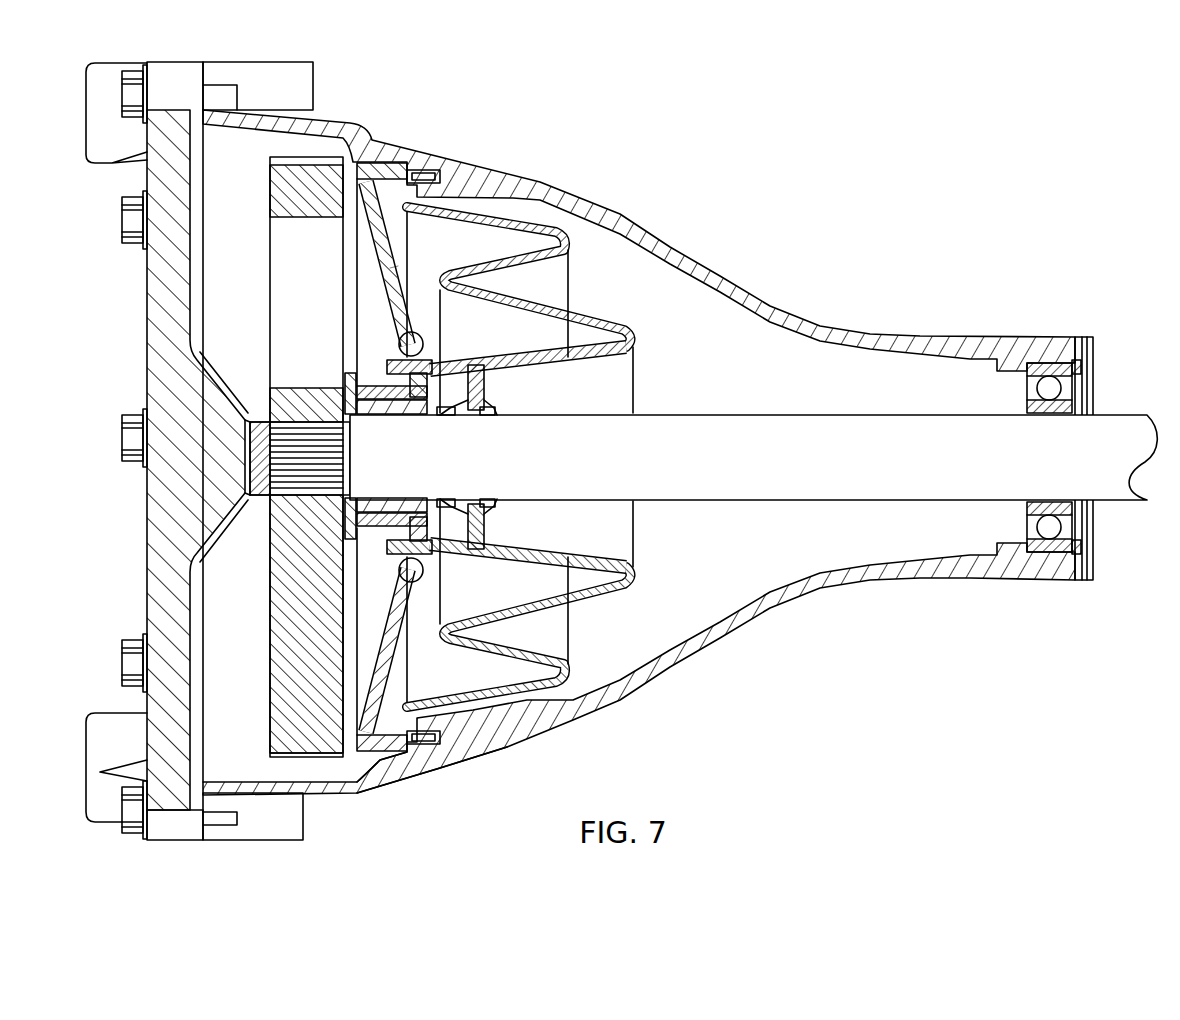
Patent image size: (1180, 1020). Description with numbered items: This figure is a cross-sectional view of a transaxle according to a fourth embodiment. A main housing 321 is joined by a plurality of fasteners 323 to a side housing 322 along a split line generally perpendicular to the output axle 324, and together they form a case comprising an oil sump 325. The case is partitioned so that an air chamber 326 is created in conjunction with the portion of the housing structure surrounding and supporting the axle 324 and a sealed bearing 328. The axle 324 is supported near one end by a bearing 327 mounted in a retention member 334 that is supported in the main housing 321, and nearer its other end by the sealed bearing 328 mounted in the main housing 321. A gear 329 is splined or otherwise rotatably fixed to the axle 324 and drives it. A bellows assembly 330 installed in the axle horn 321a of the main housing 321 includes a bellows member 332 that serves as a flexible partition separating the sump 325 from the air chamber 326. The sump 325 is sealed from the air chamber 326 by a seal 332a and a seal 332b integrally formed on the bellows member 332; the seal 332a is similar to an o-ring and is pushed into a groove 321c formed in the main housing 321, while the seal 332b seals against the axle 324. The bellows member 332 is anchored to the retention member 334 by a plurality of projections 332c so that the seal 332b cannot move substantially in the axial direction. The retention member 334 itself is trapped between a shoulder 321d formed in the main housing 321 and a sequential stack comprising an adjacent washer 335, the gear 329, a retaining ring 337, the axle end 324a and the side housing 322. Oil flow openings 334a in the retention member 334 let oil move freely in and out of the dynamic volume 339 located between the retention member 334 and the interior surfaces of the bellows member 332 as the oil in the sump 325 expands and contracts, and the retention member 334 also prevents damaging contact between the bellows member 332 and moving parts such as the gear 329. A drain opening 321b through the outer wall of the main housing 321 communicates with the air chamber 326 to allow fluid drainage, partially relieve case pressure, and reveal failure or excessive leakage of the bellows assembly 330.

The main housing 321 is at (237, 135).
The axle horn 321a is at (688, 272).
The drain opening 321b is at (539, 707).
The groove 321c is at (440, 738).
The shoulder 321d is at (378, 748).
The side housing 322 is at (165, 250).
The fasteners 323 is at (118, 220).
The output axle 324 is at (733, 473).
The axle end 324a is at (267, 498).
The oil sump 325 is at (249, 774).
The air chamber 326 is at (635, 645).
The bearing 327 is at (385, 414).
The sealed bearing 328 is at (1049, 383).
The gear 329 is at (298, 661).
The bellows assembly 330 is at (683, 183).
The bellows member 332 is at (545, 562).
The seal 332a is at (422, 178).
The seal 332b is at (484, 404).
The projections 332c is at (421, 345).
The retention member 334 is at (385, 163).
The oil flow openings 334a is at (388, 268).
The washer 335 is at (348, 380).
The retaining ring 337 is at (267, 418).
The dynamic volume 339 is at (466, 253).